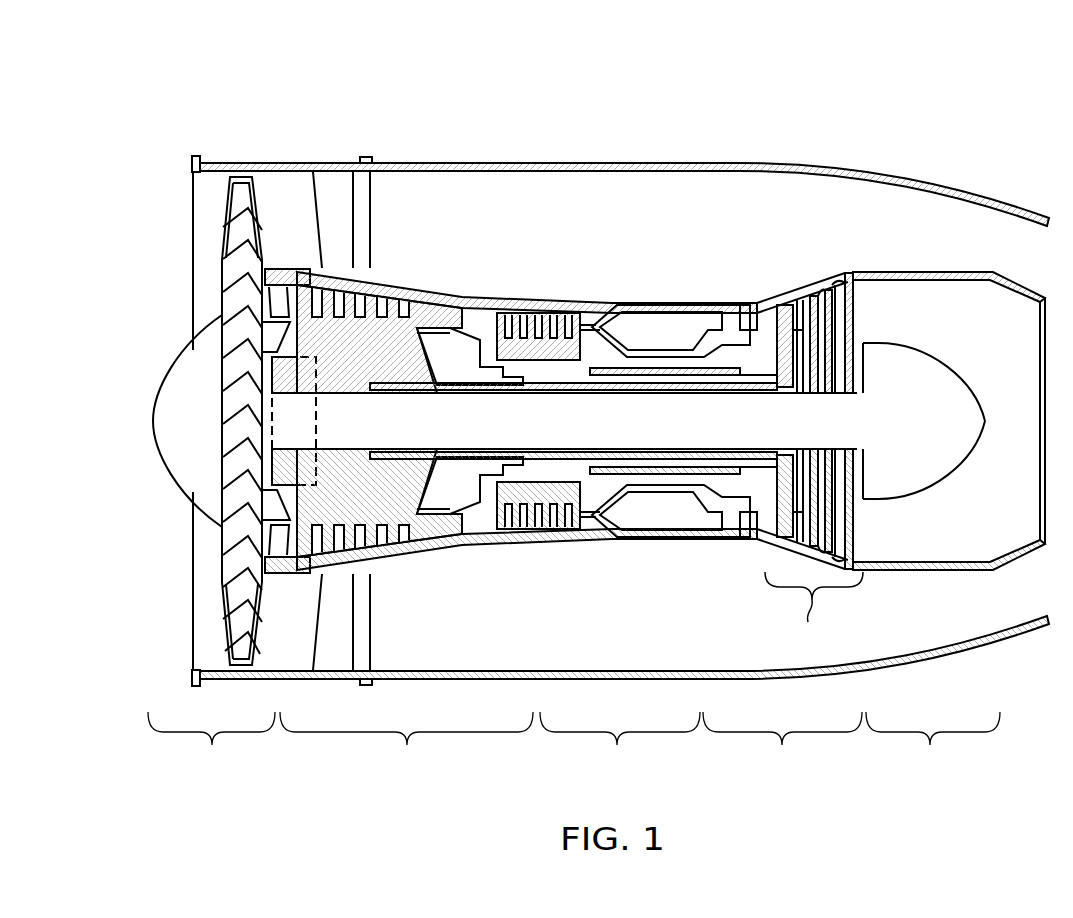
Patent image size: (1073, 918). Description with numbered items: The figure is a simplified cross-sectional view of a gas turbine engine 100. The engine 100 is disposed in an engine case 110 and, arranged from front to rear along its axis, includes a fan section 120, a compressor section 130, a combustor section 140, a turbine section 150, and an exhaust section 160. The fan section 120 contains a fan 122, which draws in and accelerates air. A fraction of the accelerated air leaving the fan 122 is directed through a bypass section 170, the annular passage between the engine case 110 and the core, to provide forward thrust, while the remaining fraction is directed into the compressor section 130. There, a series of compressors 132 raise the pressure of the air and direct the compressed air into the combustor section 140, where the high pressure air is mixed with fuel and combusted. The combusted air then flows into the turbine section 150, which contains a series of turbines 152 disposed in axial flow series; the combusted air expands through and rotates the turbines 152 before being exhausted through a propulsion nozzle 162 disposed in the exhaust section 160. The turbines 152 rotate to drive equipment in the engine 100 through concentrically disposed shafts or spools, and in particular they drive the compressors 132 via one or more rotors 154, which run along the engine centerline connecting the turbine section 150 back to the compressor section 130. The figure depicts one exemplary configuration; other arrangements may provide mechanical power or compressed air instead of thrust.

The gas turbine engine 100 is at (594, 398).
The engine case 110 is at (410, 161).
The fan section 120 is at (232, 546).
The fan 122 is at (231, 268).
The compressor section 130 is at (509, 523).
The compressors 132 is at (390, 372).
The combustor section 140 is at (623, 541).
The turbine section 150 is at (782, 525).
The turbines 152 is at (814, 614).
The rotors 154 is at (478, 397).
The exhaust section 160 is at (949, 525).
The propulsion nozzle 162 is at (934, 226).
The bypass section 170 is at (549, 208).